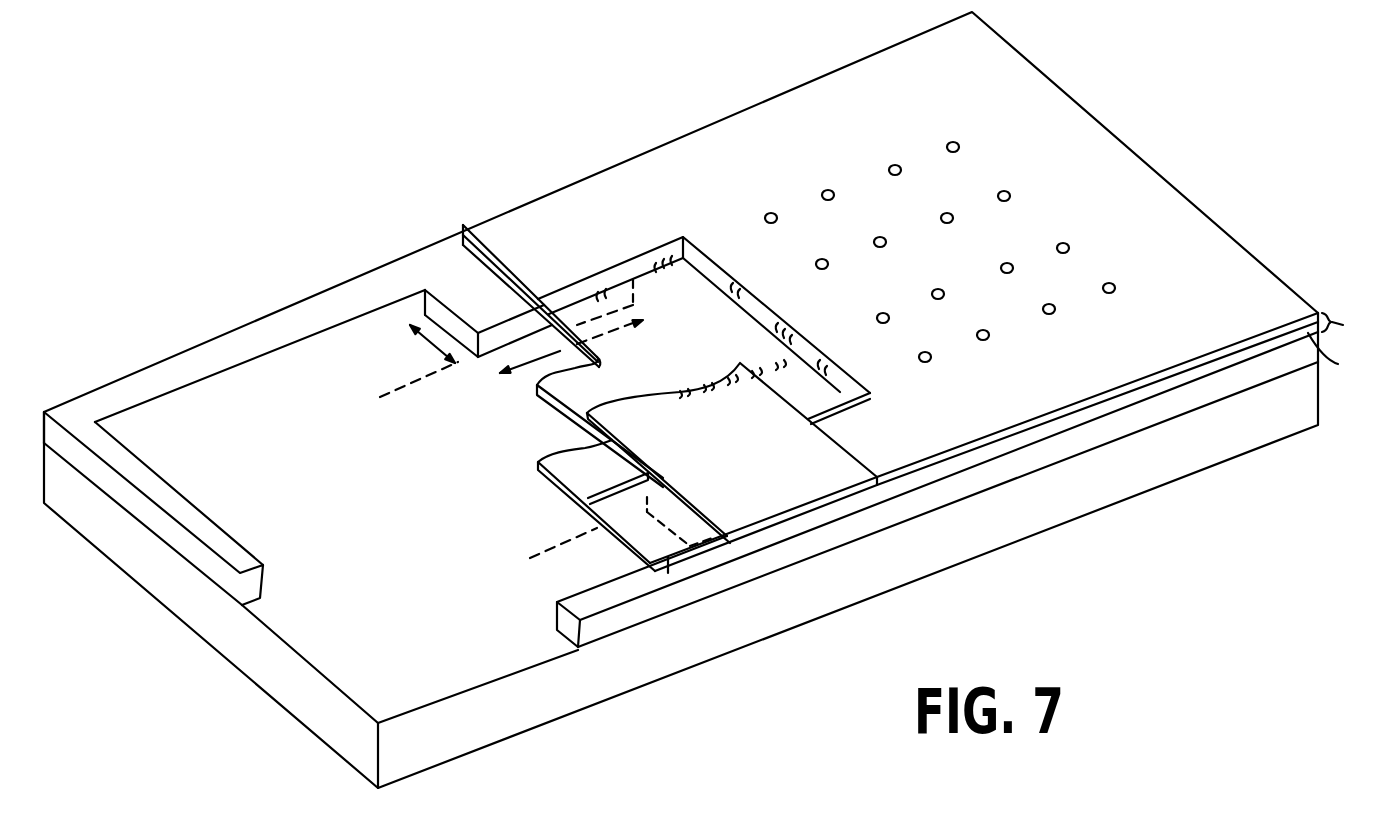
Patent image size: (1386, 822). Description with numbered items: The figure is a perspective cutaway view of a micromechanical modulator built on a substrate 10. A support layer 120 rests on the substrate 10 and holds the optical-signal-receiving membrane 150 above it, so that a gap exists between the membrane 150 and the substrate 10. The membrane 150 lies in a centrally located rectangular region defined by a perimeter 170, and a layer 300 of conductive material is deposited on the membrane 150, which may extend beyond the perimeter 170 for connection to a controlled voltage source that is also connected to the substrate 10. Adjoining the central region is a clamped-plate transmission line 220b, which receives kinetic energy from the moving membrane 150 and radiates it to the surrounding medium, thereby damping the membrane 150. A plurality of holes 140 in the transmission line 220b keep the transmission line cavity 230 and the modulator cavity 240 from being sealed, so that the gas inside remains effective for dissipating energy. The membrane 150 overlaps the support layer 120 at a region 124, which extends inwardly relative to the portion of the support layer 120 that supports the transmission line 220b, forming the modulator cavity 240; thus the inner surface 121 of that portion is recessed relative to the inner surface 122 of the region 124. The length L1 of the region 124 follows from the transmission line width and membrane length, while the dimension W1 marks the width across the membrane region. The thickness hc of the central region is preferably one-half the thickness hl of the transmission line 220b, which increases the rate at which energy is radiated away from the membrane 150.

The substrate 10 is at (637, 663).
The support layer 120 is at (257, 350).
The inner surface 121 is at (190, 398).
The inner surface 122 is at (492, 343).
The region 124 is at (468, 302).
The holes 140 is at (957, 143).
The optical-signal-receiving membrane 150 is at (705, 375).
The perimeter 170 is at (710, 267).
The clamped-plate transmission line 220b is at (876, 197).
The transmission line cavity 230 is at (430, 627).
The modulator cavity 240 is at (522, 563).
The layer of conductive material 300 is at (827, 460).
The length of the region L1 is at (427, 340).
The width W1 is at (537, 356).
The thickness of the transmission lines hl is at (1348, 331).
The thickness of the region hc is at (1342, 364).